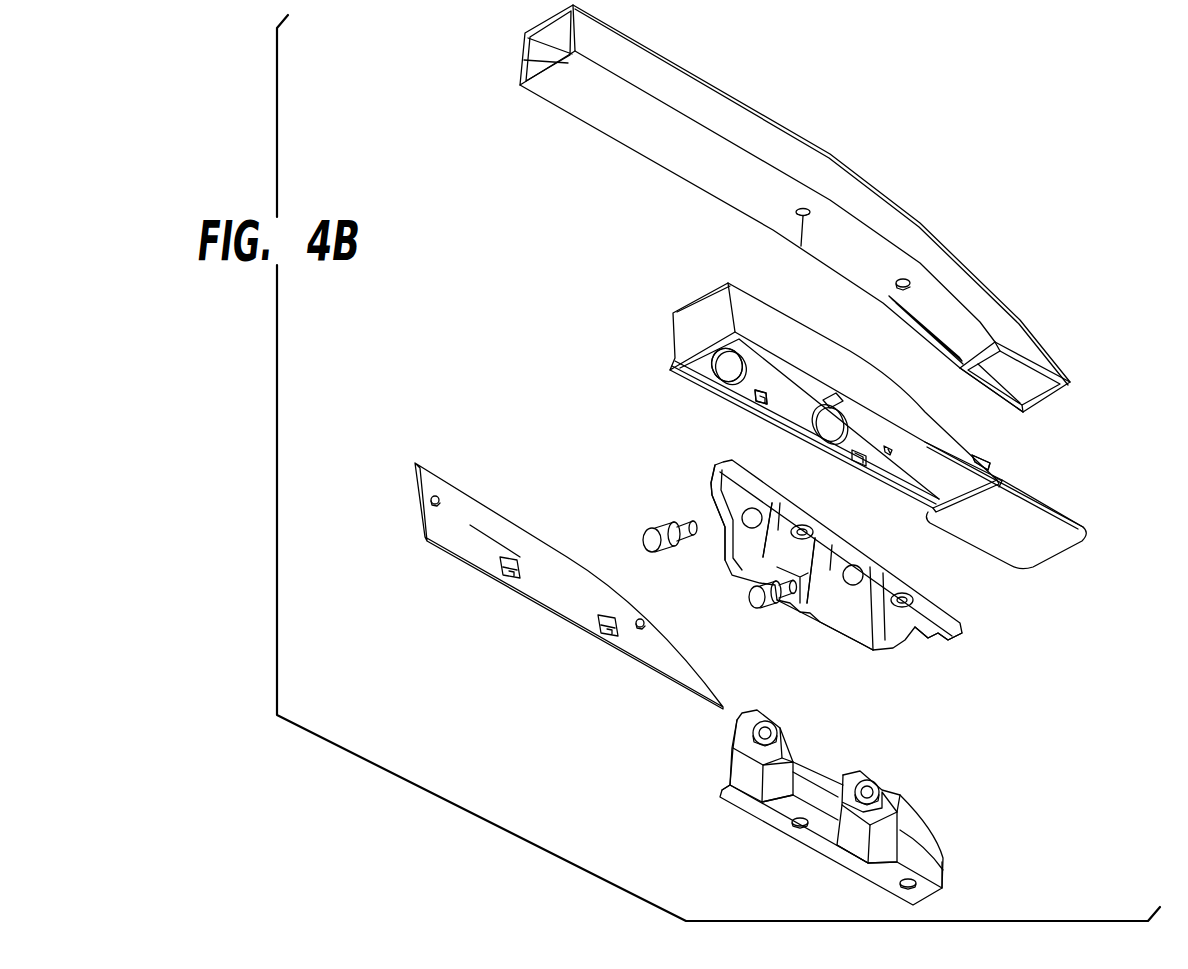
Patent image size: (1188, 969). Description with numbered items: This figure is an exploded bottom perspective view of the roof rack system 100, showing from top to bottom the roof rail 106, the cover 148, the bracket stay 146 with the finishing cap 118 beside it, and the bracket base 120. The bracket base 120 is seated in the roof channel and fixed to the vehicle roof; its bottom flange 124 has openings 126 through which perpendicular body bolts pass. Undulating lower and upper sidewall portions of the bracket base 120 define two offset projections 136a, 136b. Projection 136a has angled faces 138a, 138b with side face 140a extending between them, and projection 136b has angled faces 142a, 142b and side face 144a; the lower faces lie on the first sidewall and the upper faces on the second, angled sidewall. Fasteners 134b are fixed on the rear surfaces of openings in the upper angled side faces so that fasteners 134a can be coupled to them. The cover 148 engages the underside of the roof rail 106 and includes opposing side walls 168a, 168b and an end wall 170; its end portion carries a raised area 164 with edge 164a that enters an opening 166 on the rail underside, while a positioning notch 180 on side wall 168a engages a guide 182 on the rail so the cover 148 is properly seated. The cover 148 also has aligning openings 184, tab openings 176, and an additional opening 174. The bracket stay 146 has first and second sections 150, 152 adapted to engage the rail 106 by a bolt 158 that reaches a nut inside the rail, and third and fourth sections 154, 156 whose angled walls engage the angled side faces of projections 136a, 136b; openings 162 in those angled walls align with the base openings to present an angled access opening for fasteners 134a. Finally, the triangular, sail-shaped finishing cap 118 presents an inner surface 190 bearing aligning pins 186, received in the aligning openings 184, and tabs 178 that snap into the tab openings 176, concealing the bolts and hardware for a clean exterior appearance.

The roof rack system 100 is at (1100, 90).
The roof rail 106 is at (500, 35).
The finishing cap 118 is at (395, 468).
The bracket base 120 is at (802, 805).
The bottom flange 124 is at (870, 870).
The openings 126 is at (800, 830).
The fasteners 134a is at (645, 540).
The fasteners 134b is at (772, 722).
The projection 136a is at (895, 815).
The projection 136b is at (735, 757).
The angled face 138a is at (898, 845).
The angled face 138b is at (905, 827).
The side face 140a is at (845, 832).
The angled face 142a is at (780, 790).
The angled face 142b is at (785, 748).
The side face 144a is at (745, 780).
The bracket stay 146 is at (686, 440).
The cover 148 is at (672, 290).
The first section 150 is at (910, 630).
The second section 152 is at (778, 533).
The third section 154 is at (860, 630).
The fourth section 156 is at (720, 470).
The bolt 158 is at (800, 525).
The openings 162 is at (745, 518).
The raised area 164 is at (1023, 508).
The paddle edge 164a is at (1040, 502).
The opening 166 is at (1045, 384).
The side wall 168a is at (950, 465).
The side wall 168b is at (985, 478).
The end wall 170 is at (690, 333).
The circular opening 174 is at (730, 376).
The tab openings 176 is at (770, 404).
The tabs 178 is at (613, 617).
The positioning notch 180 is at (888, 445).
The guide 182 is at (893, 313).
The aligning opening 184 is at (896, 281).
The aligning pins 186 is at (440, 500).
The inner surface 190 is at (447, 530).